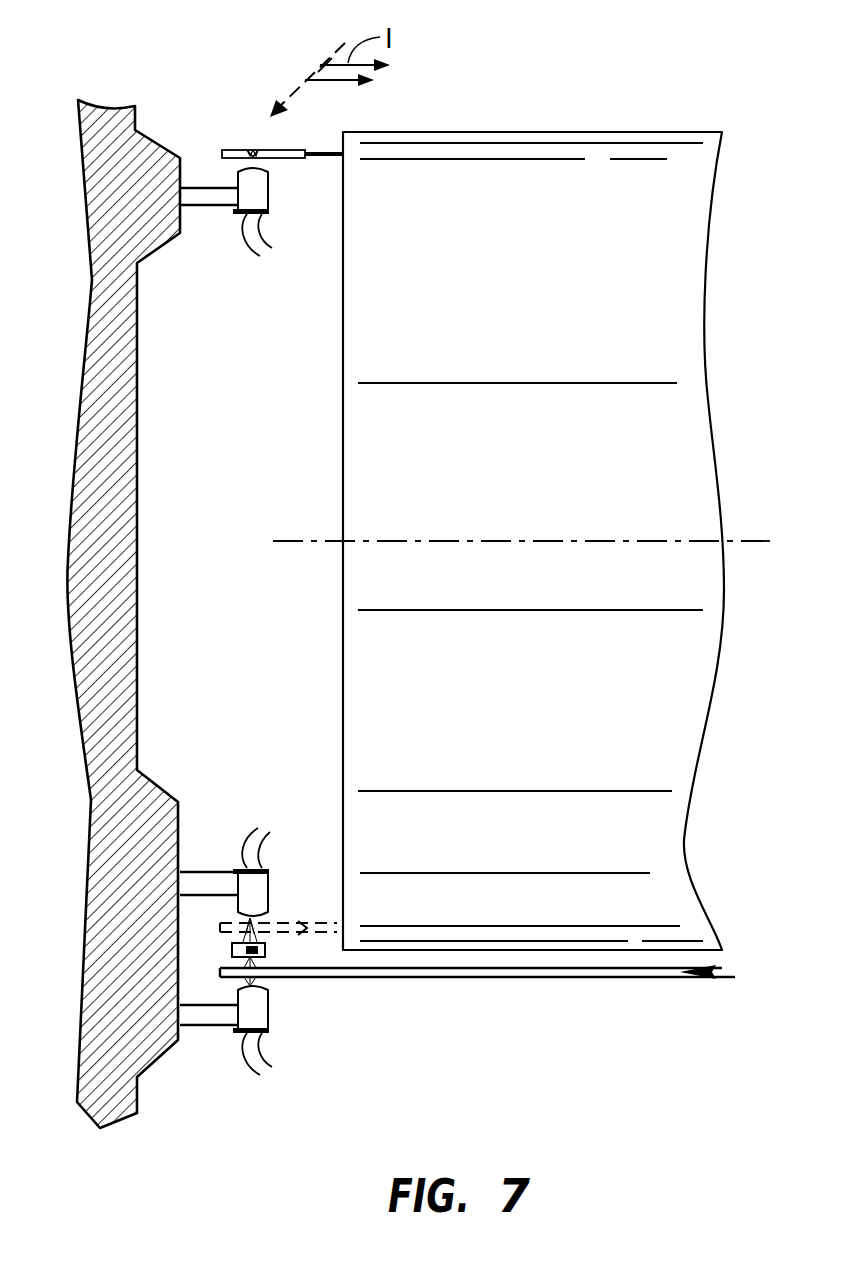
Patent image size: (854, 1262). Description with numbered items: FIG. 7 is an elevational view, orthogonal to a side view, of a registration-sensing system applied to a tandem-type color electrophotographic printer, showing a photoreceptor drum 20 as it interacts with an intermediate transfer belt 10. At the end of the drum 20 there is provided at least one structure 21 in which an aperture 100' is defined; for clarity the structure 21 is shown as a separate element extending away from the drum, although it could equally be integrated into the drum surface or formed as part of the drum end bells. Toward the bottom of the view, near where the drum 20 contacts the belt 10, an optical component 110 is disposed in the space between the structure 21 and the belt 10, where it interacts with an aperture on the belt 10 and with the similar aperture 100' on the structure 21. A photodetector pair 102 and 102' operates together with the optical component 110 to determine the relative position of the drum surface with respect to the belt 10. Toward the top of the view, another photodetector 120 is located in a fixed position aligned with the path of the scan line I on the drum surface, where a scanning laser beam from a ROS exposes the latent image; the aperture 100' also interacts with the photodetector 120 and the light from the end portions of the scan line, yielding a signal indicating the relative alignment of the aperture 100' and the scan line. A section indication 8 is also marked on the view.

The section line 8-8 viewing arrow 8 is at (253, 118).
The intermediate transfer belt 10 is at (538, 980).
The photoreceptor drum 20 is at (523, 132).
The structure 21 is at (233, 147).
The aperture 100' is at (306, 130).
The photodetector 102 is at (251, 884).
The photodetector 102' is at (257, 1026).
The optical component 110 is at (265, 952).
The photodetector 120 is at (268, 200).